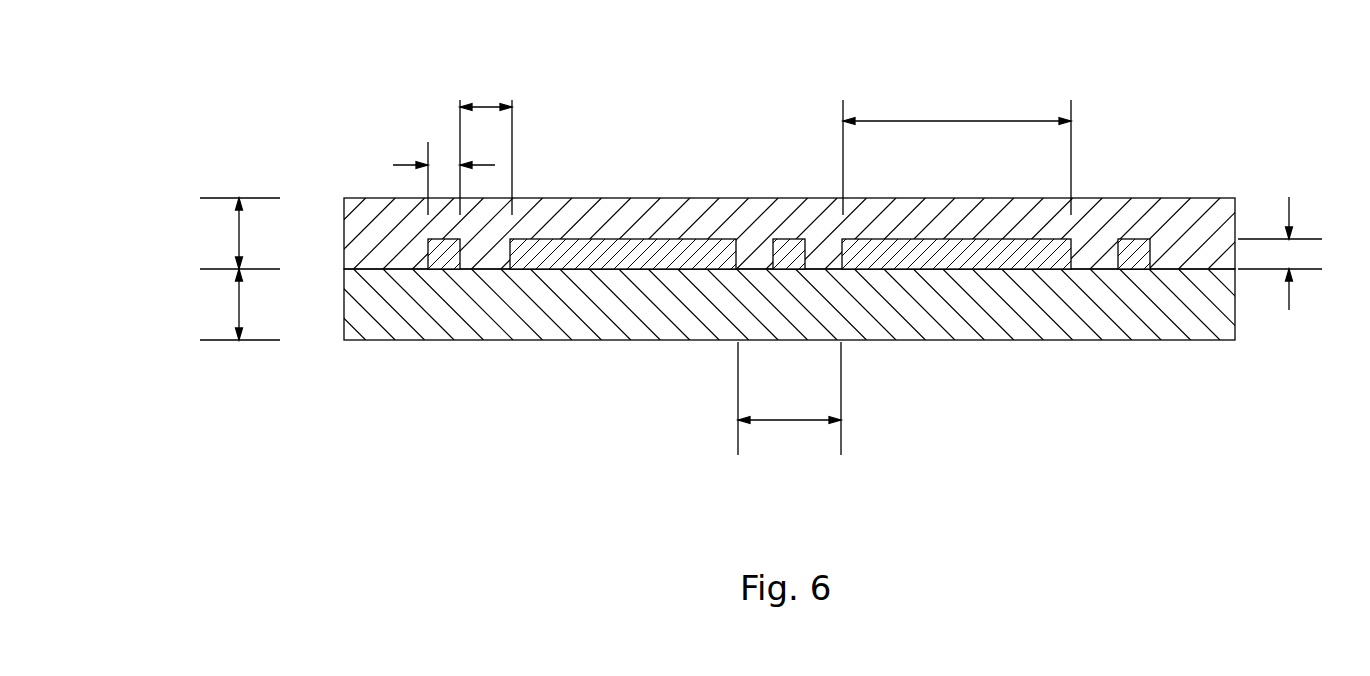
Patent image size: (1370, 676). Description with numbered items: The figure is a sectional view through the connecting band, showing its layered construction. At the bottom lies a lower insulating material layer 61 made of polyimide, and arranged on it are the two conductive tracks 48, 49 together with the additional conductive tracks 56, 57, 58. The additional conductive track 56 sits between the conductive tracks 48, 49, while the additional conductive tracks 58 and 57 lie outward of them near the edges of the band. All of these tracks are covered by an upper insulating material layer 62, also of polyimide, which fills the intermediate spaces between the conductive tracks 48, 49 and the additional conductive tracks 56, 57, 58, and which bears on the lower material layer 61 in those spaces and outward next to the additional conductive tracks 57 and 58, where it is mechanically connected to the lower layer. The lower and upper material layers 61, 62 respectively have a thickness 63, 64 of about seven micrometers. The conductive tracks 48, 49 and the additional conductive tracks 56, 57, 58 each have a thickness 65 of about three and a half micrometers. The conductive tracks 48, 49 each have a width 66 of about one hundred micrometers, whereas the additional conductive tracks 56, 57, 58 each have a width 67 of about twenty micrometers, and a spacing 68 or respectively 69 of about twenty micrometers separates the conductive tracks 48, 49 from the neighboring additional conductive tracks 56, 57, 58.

The conductive track 48 is at (1032, 258).
The conductive track 49 is at (649, 258).
The additional conductive track 56 is at (790, 246).
The additional conductive track 57 is at (1138, 252).
The additional conductive track 58 is at (446, 258).
The lower insulating material layer 61 is at (1178, 311).
The upper insulating material layer 62 is at (1203, 209).
The thickness of lower material layer 63 is at (250, 308).
The thickness of upper material layer 64 is at (250, 240).
The thickness of conductive tracks 65 is at (1289, 206).
The width of conductive tracks 66 is at (983, 121).
The width of additional conductive tracks 67 is at (404, 165).
The spacing 68 is at (486, 106).
The spacing 69 is at (797, 421).